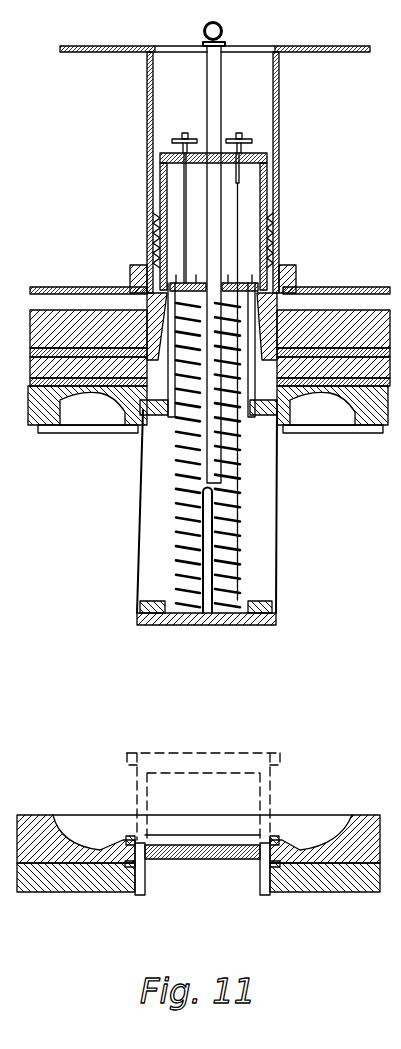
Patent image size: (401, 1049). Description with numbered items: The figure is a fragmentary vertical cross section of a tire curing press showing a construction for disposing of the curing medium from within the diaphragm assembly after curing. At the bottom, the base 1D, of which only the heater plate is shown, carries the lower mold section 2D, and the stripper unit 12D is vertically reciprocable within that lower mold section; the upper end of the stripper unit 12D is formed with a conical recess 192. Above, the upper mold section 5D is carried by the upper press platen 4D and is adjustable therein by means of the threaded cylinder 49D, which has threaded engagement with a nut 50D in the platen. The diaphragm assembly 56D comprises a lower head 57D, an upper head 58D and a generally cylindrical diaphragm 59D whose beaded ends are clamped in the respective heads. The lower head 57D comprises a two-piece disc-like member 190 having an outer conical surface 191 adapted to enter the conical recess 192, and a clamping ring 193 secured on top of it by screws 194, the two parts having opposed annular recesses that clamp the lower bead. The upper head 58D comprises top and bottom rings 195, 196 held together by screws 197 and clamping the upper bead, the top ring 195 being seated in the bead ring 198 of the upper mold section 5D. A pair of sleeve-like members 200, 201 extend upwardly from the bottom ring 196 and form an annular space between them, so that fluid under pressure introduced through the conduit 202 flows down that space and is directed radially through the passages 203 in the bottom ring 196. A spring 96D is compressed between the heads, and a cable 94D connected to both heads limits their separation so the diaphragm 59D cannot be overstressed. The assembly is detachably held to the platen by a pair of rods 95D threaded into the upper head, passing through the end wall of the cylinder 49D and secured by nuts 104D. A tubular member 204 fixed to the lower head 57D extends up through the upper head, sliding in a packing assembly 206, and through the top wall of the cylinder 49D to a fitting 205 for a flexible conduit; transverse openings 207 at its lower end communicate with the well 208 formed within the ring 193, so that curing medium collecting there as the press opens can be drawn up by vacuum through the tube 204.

The fitting 205 is at (221, 34).
The nuts 104D is at (172, 140).
The rods 95D is at (235, 178).
The threaded cylinder 49D is at (266, 190).
The packing assembly 206 is at (223, 282).
The nut 50D is at (273, 232).
The conduit 202 is at (273, 262).
The sleeve-like member 201 is at (170, 350).
The sleeve-like member 200 is at (158, 340).
The upper press platen 4D is at (330, 296).
The screws 197 is at (132, 400).
The top ring 195 is at (272, 398).
The bead ring 198 is at (150, 406).
The bottom ring 196 is at (270, 422).
The upper mold section 5D is at (367, 420).
The upper head 58D is at (150, 432).
The passages 203 is at (205, 452).
The diaphragm 59D is at (278, 500).
The diaphragm assembly 56D is at (277, 540).
The cable 94D is at (228, 578).
The spring 96D is at (176, 536).
The clamping ring 193 is at (258, 603).
The tubular member 204 is at (201, 560).
The outer conical surface 191 is at (142, 619).
The screws 194 is at (157, 616).
The disc-like member 190 is at (180, 619).
The well 208 is at (184, 612).
The transverse openings 207 is at (206, 611).
The lower head 57D is at (240, 620).
The conical recess 192 is at (140, 838).
The lower mold section 2D is at (361, 830).
The stripper unit 12D is at (235, 860).
The base 1D is at (348, 890).